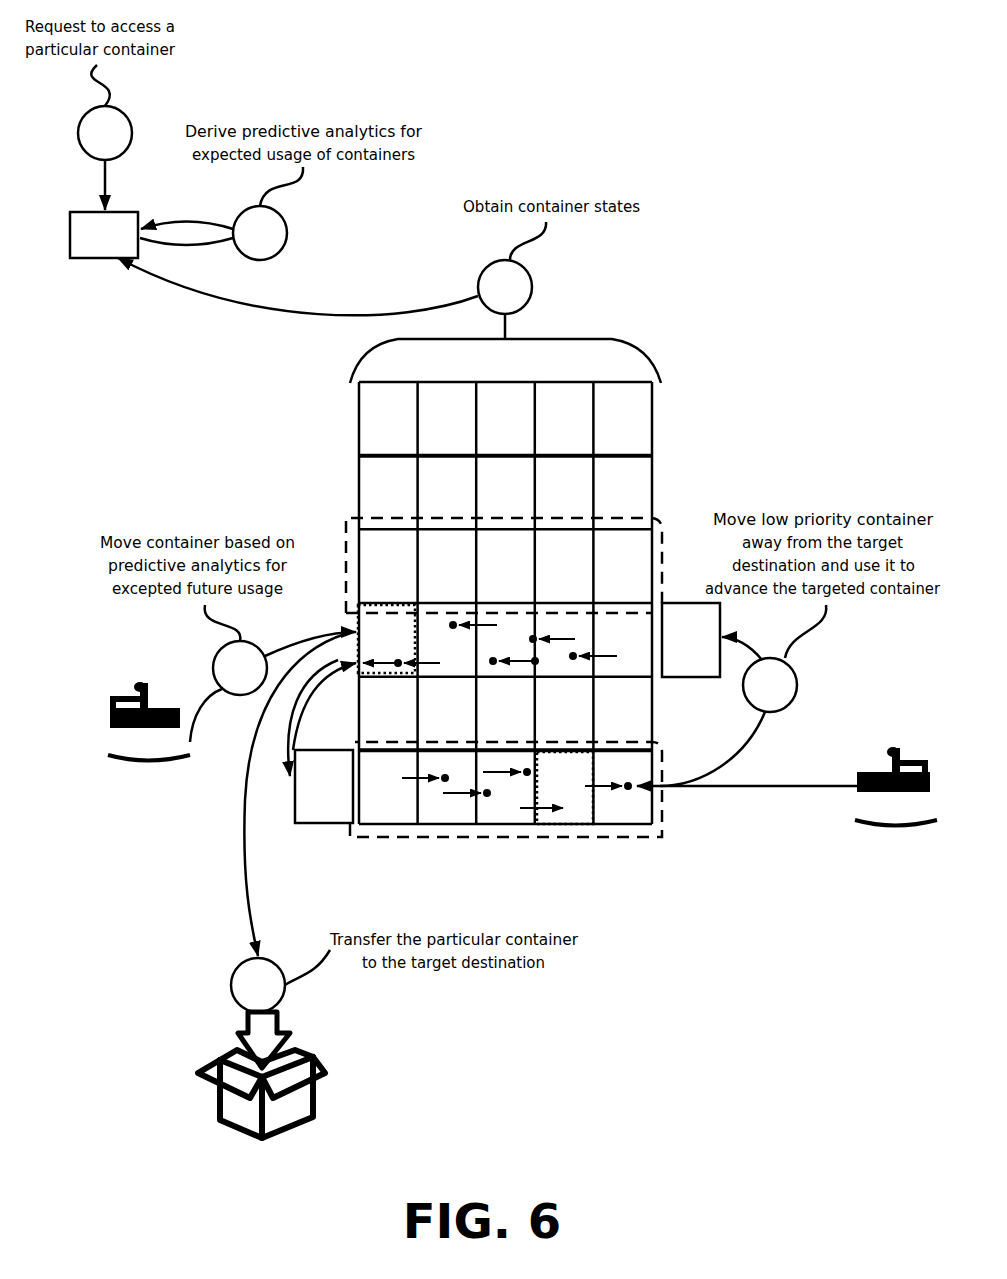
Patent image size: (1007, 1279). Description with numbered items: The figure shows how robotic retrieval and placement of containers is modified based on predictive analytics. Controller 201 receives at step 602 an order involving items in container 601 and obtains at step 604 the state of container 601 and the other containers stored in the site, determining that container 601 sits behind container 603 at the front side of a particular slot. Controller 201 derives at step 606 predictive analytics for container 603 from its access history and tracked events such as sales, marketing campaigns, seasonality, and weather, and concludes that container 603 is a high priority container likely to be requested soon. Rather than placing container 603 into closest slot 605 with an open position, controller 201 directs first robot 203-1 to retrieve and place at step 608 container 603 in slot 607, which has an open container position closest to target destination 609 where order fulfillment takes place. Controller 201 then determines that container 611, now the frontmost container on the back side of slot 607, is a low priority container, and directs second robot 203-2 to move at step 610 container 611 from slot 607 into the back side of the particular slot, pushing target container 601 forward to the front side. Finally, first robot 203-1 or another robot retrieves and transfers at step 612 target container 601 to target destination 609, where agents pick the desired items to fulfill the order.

The controller 201 is at (90, 243).
The first robot 203-1 is at (124, 750).
The second robot 203-2 is at (866, 814).
The container 601 is at (436, 651).
The receiving an order 602 is at (91, 141).
The container 603 is at (374, 651).
The obtaining container state 604 is at (491, 295).
The closest slot 605 is at (662, 507).
The deriving predictive analytics 606 is at (246, 241).
The slot 607 is at (662, 742).
The retrieving and placing container 608 is at (226, 676).
The target destination 609 is at (222, 1118).
The moving container 610 is at (756, 693).
The container 611 is at (677, 651).
The retrieving and transferring target container 612 is at (244, 993).